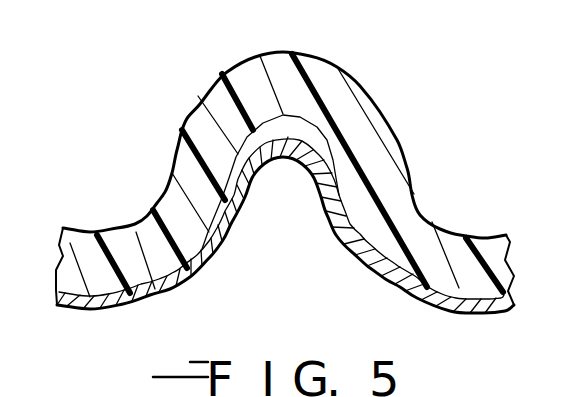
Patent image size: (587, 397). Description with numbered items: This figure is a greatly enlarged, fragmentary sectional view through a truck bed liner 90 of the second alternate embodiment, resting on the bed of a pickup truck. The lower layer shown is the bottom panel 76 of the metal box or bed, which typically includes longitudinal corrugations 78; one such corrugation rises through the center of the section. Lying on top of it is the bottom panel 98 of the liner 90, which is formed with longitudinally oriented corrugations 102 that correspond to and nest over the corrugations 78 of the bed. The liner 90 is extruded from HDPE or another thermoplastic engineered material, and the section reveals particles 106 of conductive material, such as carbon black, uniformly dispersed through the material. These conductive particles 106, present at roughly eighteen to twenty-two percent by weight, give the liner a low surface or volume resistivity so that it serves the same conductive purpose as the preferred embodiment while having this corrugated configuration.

The truck bed liner 90 is at (300, 173).
The corrugations 102 is at (340, 93).
The particles of conductive material 106 is at (194, 115).
The bottom panel 98 is at (456, 255).
The longitudinal corrugations 78 is at (285, 160).
The bottom panel 76 is at (443, 327).